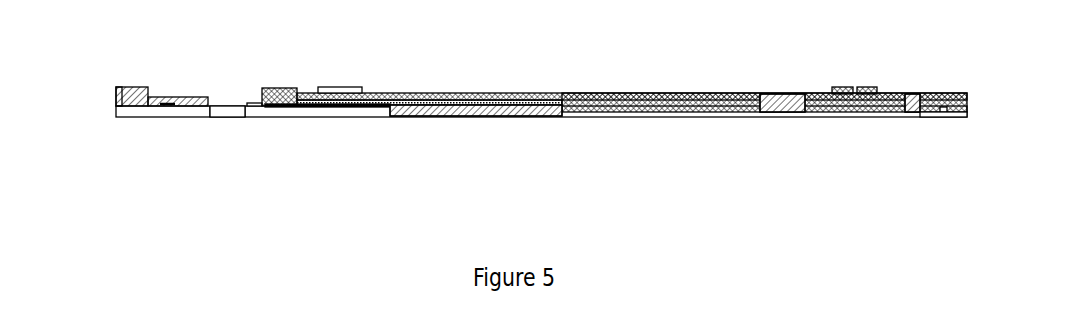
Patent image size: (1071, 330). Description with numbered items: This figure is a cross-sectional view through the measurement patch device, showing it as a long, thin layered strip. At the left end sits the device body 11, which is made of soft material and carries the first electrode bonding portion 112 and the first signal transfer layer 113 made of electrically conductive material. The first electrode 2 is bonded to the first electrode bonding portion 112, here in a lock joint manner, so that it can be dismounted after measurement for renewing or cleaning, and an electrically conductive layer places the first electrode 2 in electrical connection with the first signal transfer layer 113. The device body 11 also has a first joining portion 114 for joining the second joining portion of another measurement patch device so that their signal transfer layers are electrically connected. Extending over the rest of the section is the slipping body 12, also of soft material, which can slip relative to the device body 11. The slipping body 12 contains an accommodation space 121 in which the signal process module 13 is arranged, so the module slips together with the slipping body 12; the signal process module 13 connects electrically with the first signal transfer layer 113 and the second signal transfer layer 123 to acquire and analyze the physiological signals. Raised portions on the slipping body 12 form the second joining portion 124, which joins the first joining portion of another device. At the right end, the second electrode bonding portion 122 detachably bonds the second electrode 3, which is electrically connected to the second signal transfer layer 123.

The first electrode 2 is at (163, 108).
The second electrode 3 is at (930, 118).
The device body 11 is at (128, 87).
The slipping body 12 is at (960, 92).
The signal process module 13 is at (356, 87).
The first electrode bonding portion 112 is at (116, 95).
The first signal transfer layer 113 is at (415, 117).
The first joining portion 114 is at (225, 104).
The accommodation space 121 is at (285, 88).
The second electrode bonding portion 122 is at (946, 117).
The second signal transfer layer 123 is at (461, 93).
The second joining portion 124 is at (868, 88).